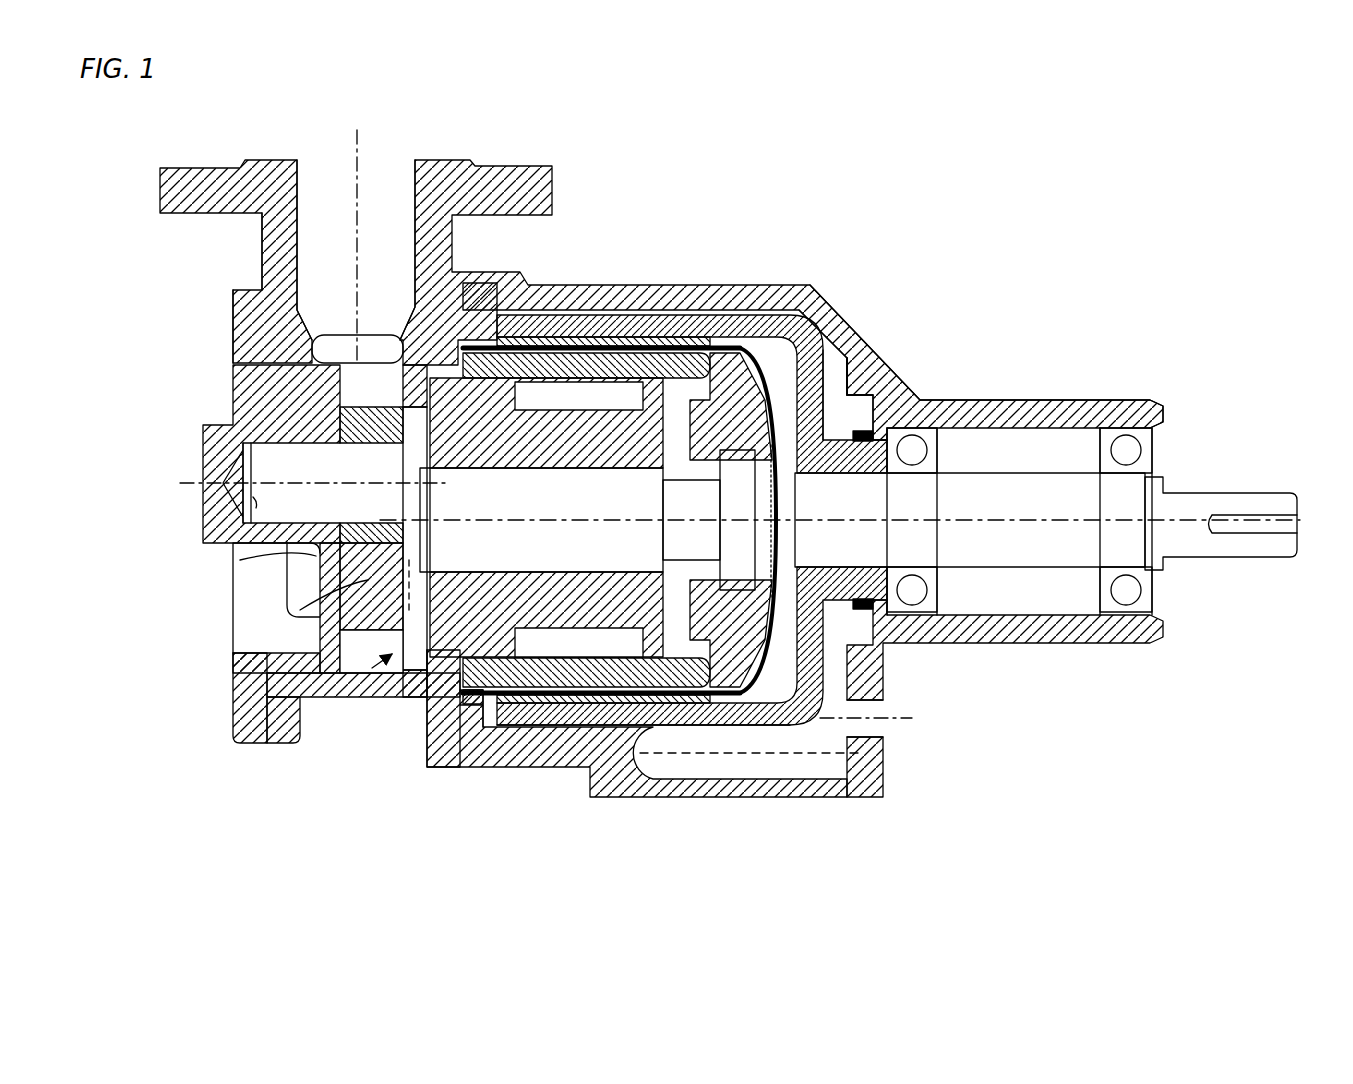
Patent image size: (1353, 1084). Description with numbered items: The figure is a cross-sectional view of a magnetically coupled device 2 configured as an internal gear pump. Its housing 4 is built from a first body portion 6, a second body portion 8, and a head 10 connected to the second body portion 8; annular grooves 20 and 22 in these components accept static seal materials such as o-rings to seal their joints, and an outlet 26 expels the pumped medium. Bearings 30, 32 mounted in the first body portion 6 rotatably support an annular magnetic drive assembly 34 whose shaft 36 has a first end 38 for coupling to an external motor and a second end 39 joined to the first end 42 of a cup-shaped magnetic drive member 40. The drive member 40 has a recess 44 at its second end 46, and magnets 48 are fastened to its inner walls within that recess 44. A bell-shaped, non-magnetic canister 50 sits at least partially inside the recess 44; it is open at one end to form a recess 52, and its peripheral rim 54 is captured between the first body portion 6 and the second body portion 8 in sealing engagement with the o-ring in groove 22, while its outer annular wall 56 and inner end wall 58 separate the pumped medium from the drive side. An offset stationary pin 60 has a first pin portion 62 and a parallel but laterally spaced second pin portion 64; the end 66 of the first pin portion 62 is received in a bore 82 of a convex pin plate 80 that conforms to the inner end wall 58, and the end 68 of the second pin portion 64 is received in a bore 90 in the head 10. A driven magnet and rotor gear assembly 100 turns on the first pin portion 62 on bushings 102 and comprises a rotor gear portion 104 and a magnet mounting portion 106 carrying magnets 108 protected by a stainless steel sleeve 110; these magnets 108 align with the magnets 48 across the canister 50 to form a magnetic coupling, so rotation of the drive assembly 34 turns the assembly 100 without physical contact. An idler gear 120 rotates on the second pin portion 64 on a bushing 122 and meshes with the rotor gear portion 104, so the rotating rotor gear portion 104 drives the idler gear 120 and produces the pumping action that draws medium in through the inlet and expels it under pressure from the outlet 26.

The magnetically coupled device 2 is at (1012, 240).
The housing 4 is at (655, 275).
The first body portion 6 is at (880, 358).
The second body portion 8 is at (290, 746).
The head 10 is at (243, 746).
The annular groove 20 is at (233, 684).
The annular groove 22 is at (420, 745).
The outlet 26 is at (398, 178).
The bearing 30 is at (925, 435).
The bearing 32 is at (1138, 435).
The annular magnetic drive assembly 34 is at (845, 335).
The shaft 36 is at (1027, 495).
The first end 38 is at (1273, 507).
The second end 39 is at (878, 380).
The cup-shaped magnetic drive member 40 is at (830, 340).
The first end 42 is at (870, 645).
The recess 44 is at (465, 752).
The second end 46 is at (520, 735).
The magnets 48 is at (548, 735).
The canister 50 is at (805, 722).
The recess 52 is at (420, 710).
The peripheral rim 54 is at (433, 770).
The outer annular wall 56 is at (745, 725).
The inner end wall 58 is at (887, 773).
The offset stationary pin 60 is at (545, 342).
The first pin portion 62 is at (668, 360).
The second pin portion 64 is at (268, 455).
The end 66 is at (750, 362).
The end 68 is at (237, 497).
The pin plate 80 is at (780, 650).
The bore 82 is at (772, 345).
The bore 90 is at (232, 402).
The driven magnet and rotor gear assembly 100 is at (352, 673).
The bushings 102 is at (612, 630).
The rotor gear portion 104 is at (410, 332).
The magnet mounting portion 106 is at (690, 690).
The magnets 108 is at (645, 720).
The stainless steel sleeve 110 is at (722, 600).
The idler gear 120 is at (300, 610).
The bushing 122 is at (240, 560).